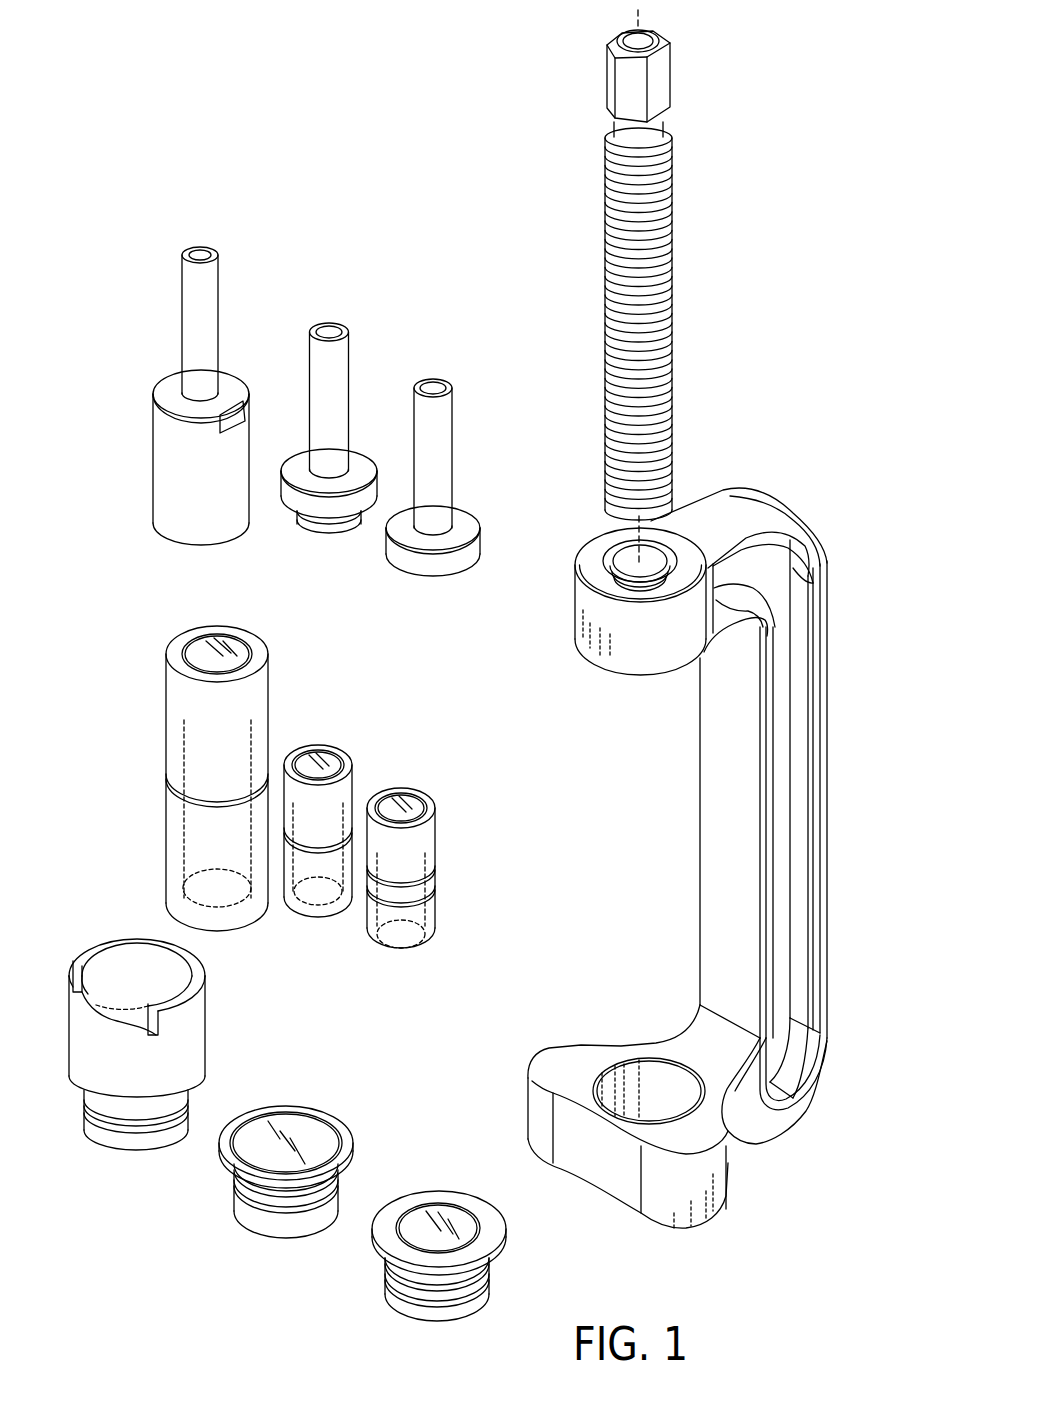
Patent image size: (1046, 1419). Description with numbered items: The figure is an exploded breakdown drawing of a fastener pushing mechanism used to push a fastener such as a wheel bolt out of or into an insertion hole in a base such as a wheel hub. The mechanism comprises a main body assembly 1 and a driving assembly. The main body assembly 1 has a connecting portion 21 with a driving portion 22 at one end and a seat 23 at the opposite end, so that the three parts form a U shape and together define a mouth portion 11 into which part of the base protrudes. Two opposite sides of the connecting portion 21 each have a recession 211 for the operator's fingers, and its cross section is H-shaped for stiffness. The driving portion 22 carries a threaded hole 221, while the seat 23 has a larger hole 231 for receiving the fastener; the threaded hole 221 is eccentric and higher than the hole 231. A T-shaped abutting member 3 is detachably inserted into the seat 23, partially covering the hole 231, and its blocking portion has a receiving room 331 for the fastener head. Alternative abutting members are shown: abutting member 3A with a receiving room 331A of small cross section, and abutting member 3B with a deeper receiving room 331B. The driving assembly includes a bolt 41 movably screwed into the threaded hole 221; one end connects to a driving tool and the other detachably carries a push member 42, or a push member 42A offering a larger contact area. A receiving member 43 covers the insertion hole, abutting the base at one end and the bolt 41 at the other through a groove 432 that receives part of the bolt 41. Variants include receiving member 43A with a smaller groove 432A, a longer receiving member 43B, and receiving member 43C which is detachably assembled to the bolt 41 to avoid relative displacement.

The main body assembly 1 is at (775, 443).
The mouth portion 11 is at (603, 849).
The connecting portion 21 is at (710, 940).
The recession 211 is at (796, 958).
The driving portion 22 is at (620, 602).
The threaded hole 221 is at (621, 560).
The seat 23 is at (679, 1109).
The hole 231 is at (642, 1062).
The abutting member 3 is at (245, 1111).
The abutting member 3A is at (392, 1199).
The abutting member 3B is at (125, 1007).
The receiving room 331 is at (244, 1133).
The receiving room 331A is at (406, 1224).
The receiving room 331B is at (120, 1012).
The bolt 41 is at (652, 240).
The push member 42 is at (321, 272).
The push member 42A is at (460, 336).
The receiving member 43 is at (352, 767).
The receiving member 43A is at (467, 813).
The receiving member 43B is at (127, 658).
The receiving member 43C is at (152, 197).
The groove 432 is at (323, 750).
The groove 432A is at (406, 800).